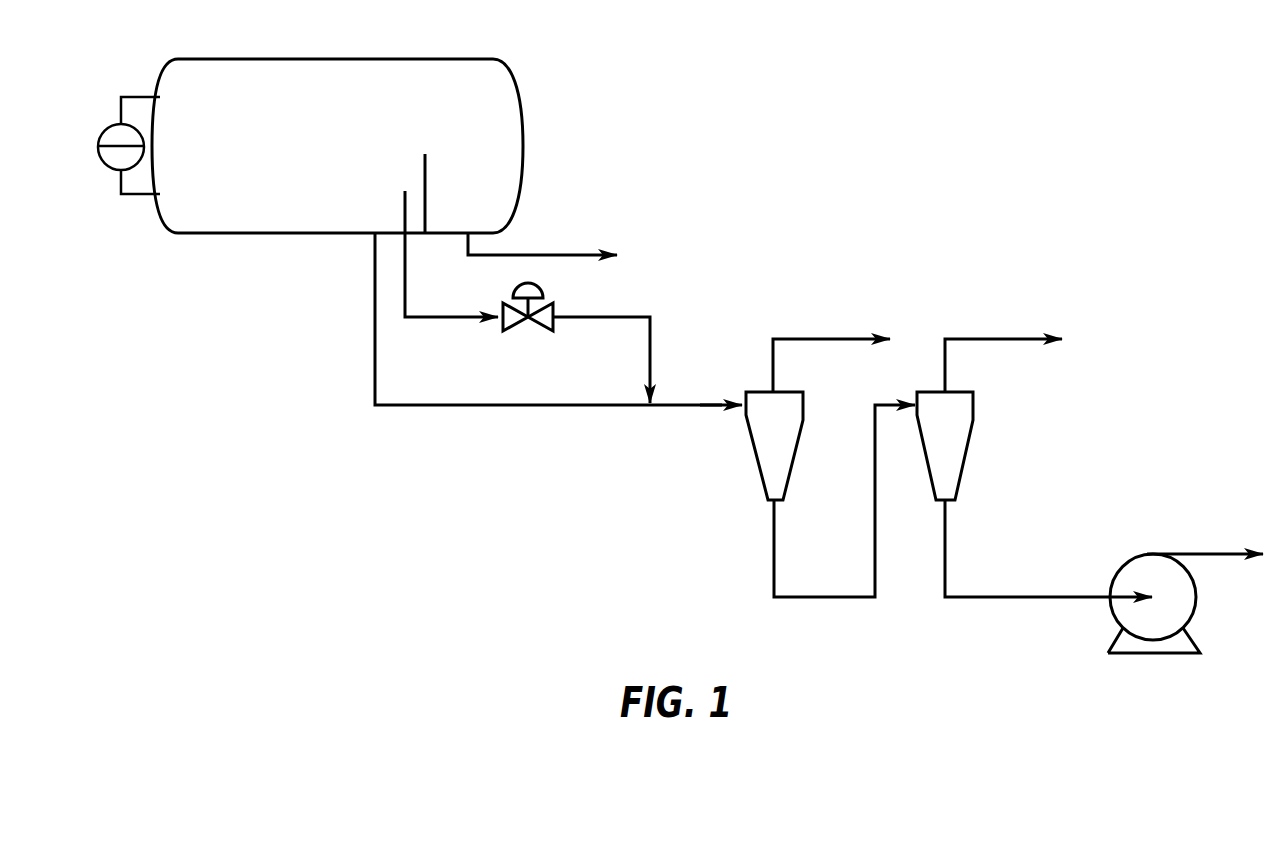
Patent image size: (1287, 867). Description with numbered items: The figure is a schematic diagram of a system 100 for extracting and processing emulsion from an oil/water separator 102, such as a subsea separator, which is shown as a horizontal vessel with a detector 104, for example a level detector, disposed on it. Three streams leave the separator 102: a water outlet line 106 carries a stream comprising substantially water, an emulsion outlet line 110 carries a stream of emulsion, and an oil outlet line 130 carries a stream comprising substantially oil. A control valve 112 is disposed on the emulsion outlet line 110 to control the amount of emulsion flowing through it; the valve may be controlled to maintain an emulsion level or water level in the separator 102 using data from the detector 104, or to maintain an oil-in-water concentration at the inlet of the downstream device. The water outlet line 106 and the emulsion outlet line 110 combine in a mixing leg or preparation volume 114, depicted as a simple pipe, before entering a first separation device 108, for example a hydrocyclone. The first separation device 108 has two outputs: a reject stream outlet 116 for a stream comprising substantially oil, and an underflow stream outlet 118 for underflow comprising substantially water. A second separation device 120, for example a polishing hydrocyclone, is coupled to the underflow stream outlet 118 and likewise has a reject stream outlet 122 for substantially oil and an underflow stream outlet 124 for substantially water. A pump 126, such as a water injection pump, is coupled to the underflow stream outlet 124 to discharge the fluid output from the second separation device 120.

The system 100 is at (1046, 68).
The oil/water separator 102 is at (510, 84).
The detector 104 is at (99, 137).
The water outlet line 106 is at (437, 404).
The first separation device 108 is at (755, 453).
The emulsion outlet line 110 is at (597, 315).
The control valve 112 is at (535, 327).
The mixing leg 114 is at (702, 410).
The reject stream outlet 116 is at (827, 335).
The underflow stream outlet 118 is at (800, 598).
The second separation device 120 is at (967, 452).
The reject stream outlet 122 is at (997, 337).
The underflow stream outlet 124 is at (980, 598).
The pump 126 is at (1125, 562).
The oil outlet line 130 is at (523, 253).